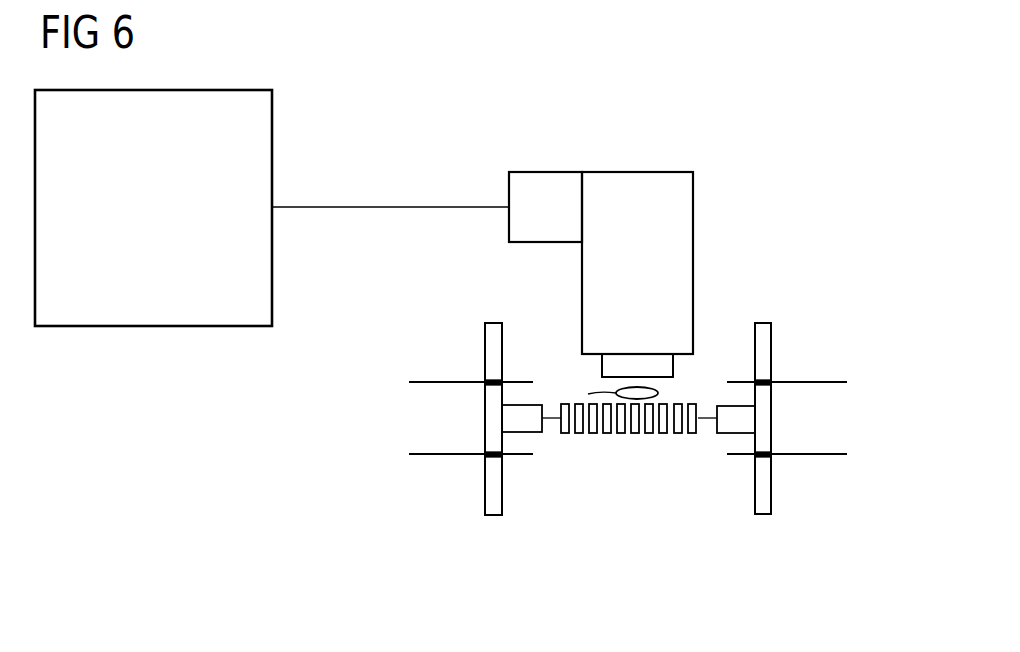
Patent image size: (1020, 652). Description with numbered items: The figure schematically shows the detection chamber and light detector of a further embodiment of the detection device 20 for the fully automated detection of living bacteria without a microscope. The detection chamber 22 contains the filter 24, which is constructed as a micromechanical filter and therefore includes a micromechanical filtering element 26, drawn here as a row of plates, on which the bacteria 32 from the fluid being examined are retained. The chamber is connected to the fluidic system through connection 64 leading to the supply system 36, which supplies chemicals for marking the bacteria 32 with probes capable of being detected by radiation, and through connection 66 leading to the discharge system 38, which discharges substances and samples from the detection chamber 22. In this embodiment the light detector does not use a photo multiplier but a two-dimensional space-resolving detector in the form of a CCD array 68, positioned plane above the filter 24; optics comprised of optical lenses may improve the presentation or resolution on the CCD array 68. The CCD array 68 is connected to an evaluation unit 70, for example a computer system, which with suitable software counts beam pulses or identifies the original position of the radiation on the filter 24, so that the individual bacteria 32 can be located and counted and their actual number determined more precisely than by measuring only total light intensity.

The detection device 20 is at (774, 244).
The detection chamber 22 is at (733, 496).
The filter 24 is at (646, 446).
The micromechanical filtering element 26 is at (663, 434).
The bacteria 32 is at (658, 391).
The supply system 36 is at (440, 470).
The discharge system 38 is at (832, 468).
The connection to the supply system 64 is at (420, 453).
The connection to the discharge system 66 is at (788, 453).
The CCD array 68 is at (645, 170).
The evaluation unit 70 is at (155, 327).